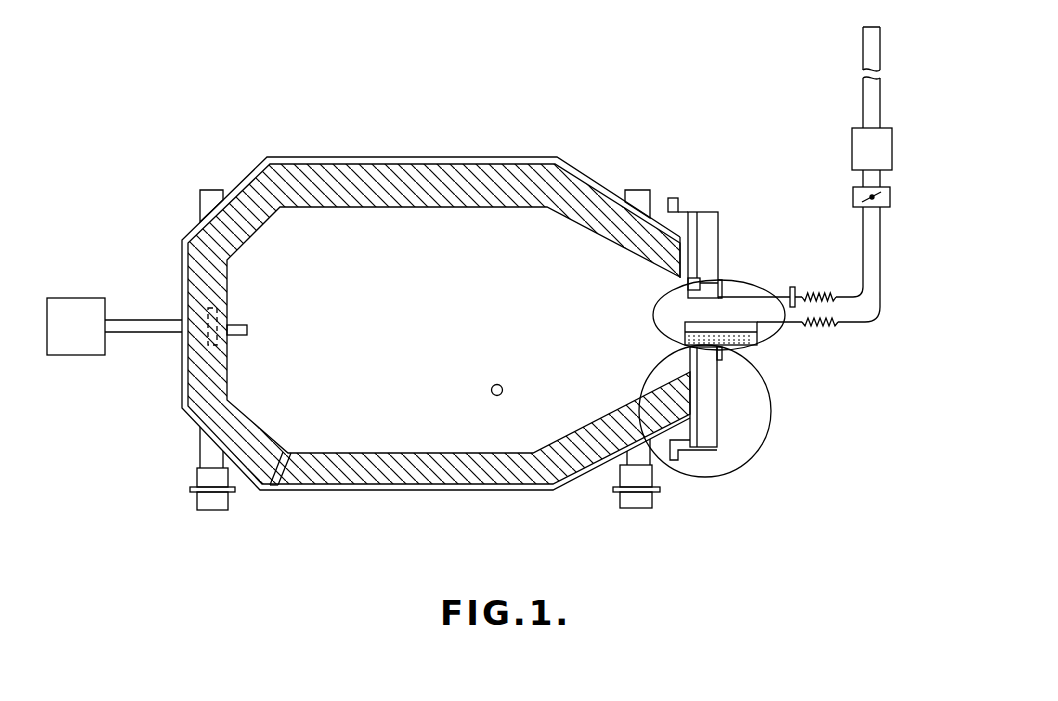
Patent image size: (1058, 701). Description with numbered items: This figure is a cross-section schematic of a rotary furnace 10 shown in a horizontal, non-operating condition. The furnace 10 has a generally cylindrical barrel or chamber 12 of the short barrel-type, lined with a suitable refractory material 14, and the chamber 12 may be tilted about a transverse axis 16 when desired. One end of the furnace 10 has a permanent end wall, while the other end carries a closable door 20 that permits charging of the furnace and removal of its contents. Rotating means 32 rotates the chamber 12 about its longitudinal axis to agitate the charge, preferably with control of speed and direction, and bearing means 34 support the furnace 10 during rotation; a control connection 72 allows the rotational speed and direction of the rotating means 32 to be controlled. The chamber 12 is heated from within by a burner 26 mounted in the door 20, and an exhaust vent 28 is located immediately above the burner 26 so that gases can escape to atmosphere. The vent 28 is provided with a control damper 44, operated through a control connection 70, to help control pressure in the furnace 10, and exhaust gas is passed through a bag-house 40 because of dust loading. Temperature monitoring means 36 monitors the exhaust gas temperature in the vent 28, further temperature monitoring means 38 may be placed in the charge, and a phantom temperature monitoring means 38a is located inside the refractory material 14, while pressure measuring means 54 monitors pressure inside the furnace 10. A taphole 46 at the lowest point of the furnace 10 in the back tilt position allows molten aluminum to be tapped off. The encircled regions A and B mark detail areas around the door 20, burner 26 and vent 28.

The furnace 10 is at (605, 148).
The chamber 12 is at (395, 158).
The refractory material 14 is at (310, 188).
The transverse axis 16 is at (503, 387).
The closable door 20 is at (735, 240).
The burner 26 is at (748, 340).
The exhaust vent 28 is at (737, 308).
The rotating means 32 is at (90, 298).
The bearing means 34 is at (193, 492).
The temperature monitoring means 36 is at (797, 290).
The temperature monitoring means 38 is at (245, 340).
The temperature monitoring means 38a is at (216, 311).
The bag-house 40 is at (892, 140).
The control damper 44 is at (893, 200).
The taphole 46 is at (283, 465).
The pressure measuring means 54 is at (686, 282).
The control connection 70 is at (850, 197).
The control connection 72 is at (75, 360).
The detail region A is at (773, 409).
The detail region B is at (652, 325).